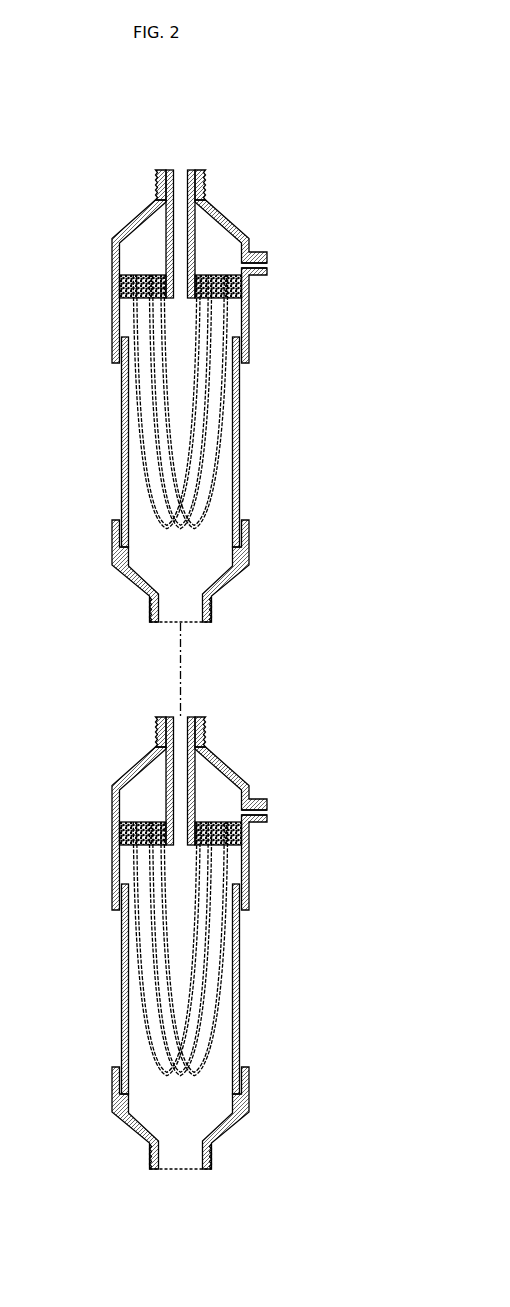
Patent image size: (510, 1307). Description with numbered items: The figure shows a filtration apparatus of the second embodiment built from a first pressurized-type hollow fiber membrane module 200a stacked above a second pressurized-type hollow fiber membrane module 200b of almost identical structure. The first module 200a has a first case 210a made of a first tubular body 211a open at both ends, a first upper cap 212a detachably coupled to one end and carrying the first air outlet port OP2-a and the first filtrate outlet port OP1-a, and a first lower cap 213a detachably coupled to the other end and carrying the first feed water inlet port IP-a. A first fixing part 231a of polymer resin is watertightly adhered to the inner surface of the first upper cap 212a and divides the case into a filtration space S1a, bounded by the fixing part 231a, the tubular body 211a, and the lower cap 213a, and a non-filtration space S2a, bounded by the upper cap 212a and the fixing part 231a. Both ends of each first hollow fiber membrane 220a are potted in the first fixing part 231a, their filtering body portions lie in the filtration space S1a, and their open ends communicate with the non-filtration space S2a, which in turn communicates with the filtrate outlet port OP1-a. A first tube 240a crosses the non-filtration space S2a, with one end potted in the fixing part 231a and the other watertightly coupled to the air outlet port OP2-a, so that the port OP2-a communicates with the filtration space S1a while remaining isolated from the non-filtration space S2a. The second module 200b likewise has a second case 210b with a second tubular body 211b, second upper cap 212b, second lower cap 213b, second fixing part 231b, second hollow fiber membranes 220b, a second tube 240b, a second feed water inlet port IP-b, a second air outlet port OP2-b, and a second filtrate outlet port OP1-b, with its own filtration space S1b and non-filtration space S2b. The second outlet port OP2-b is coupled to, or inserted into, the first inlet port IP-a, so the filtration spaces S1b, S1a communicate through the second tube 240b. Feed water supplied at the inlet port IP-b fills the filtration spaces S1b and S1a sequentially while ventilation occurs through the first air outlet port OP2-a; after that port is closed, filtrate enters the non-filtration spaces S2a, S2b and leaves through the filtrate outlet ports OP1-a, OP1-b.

The first pressurized-type hollow fiber membrane module 200a is at (247, 186).
The second pressurized-type hollow fiber membrane module 200b is at (209, 923).
The first case 210a is at (335, 348).
The second case 210b is at (249, 958).
The first tubular body 211a is at (240, 440).
The second tubular body 211b is at (225, 989).
The first upper cap 212a is at (250, 352).
The second upper cap 212b is at (220, 830).
The first lower cap 213a is at (248, 530).
The second lower cap 213b is at (220, 1118).
The first hollow fiber membranes 220a is at (140, 405).
The second hollow fiber membranes 220b is at (141, 949).
The first fixing part 231a is at (248, 287).
The second fixing part 231b is at (231, 839).
The first tube 240a is at (167, 229).
The second tube 240b is at (130, 781).
The first filtrate outlet port OP1-a is at (266, 272).
The second filtrate outlet port OP1-b is at (296, 821).
The first air outlet port OP2-a is at (155, 190).
The second air outlet port OP2-b is at (140, 732).
The first feed water inlet port IP-a is at (212, 610).
The second feed water inlet port IP-b is at (219, 1163).
The filtration space S1a is at (155, 548).
The filtration space S1b is at (98, 1126).
The non-filtration space S2a is at (143, 259).
The non-filtration space S2b is at (88, 812).